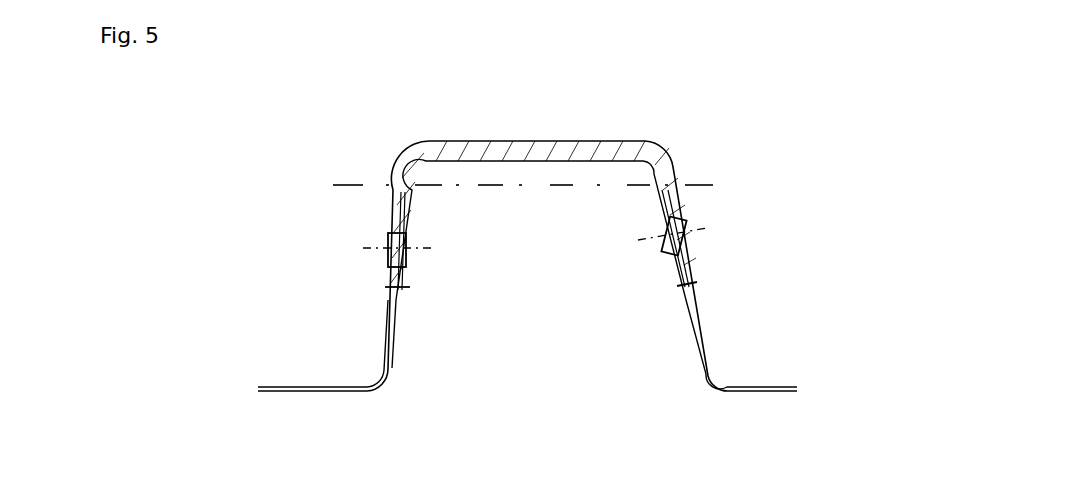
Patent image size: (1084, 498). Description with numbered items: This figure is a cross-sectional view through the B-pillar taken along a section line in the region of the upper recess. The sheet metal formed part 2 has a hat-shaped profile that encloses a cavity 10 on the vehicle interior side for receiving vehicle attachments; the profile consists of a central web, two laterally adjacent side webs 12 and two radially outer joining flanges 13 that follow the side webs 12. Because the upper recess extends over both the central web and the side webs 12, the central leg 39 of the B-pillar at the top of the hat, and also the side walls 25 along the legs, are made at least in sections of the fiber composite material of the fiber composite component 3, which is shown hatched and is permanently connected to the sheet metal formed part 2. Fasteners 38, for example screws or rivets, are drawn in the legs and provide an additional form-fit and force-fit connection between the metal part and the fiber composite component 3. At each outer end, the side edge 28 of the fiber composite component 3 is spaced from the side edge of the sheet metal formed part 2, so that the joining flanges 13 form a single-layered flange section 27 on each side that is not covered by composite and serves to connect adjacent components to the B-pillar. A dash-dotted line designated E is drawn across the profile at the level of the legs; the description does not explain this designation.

The cavity 10 is at (543, 327).
The sheet metal formed part 2 is at (688, 259).
The fiber composite component 3 is at (633, 141).
The side webs 12 is at (707, 345).
The joining flanges 13 is at (765, 392).
The side walls 25 is at (698, 312).
The single-layered flange section 27 is at (765, 388).
The side edge of the fiber composite component 28 is at (388, 290).
The fasteners 38 is at (370, 242).
The central leg 39 is at (533, 141).
The reference plane E is at (707, 185).